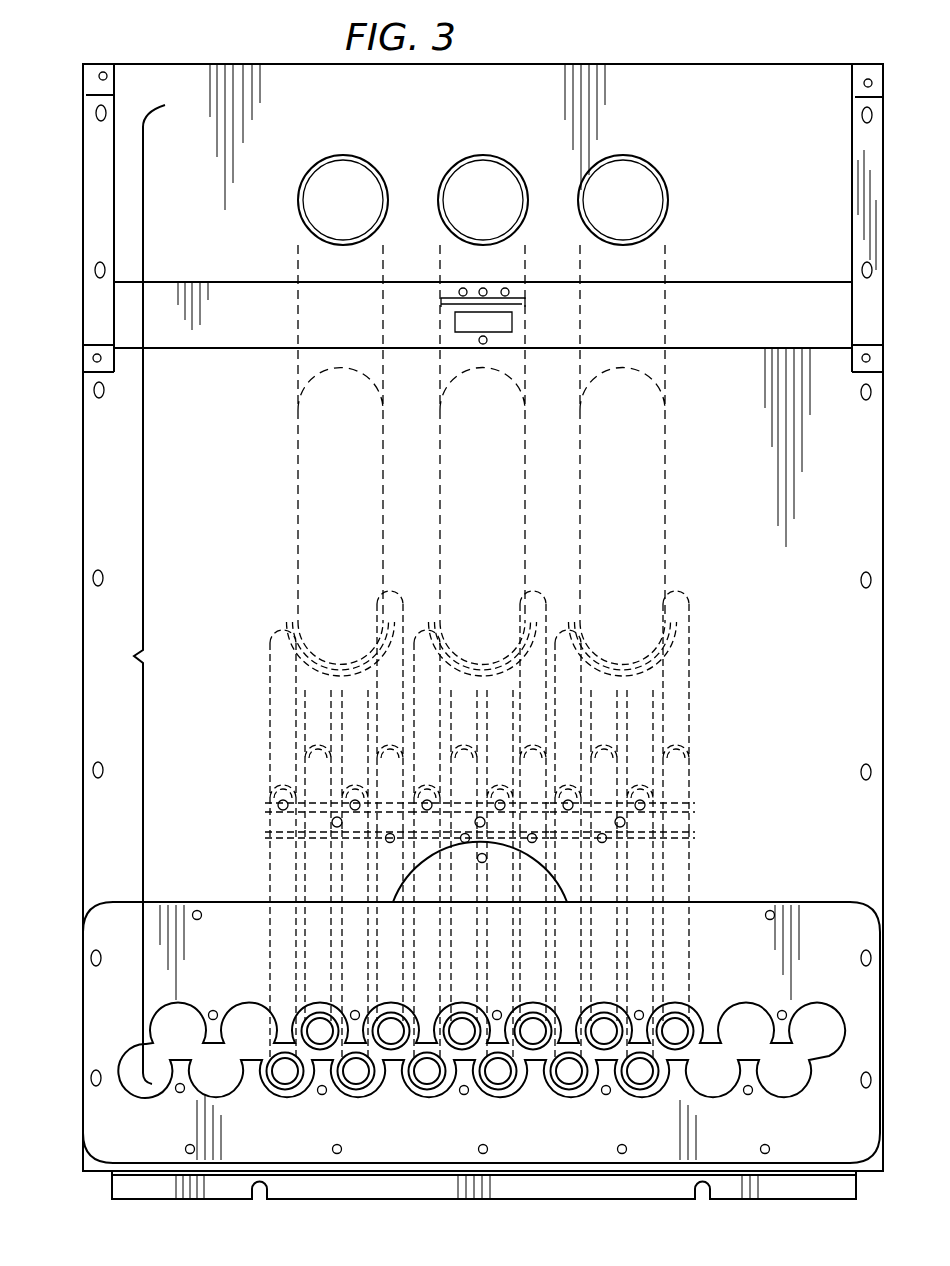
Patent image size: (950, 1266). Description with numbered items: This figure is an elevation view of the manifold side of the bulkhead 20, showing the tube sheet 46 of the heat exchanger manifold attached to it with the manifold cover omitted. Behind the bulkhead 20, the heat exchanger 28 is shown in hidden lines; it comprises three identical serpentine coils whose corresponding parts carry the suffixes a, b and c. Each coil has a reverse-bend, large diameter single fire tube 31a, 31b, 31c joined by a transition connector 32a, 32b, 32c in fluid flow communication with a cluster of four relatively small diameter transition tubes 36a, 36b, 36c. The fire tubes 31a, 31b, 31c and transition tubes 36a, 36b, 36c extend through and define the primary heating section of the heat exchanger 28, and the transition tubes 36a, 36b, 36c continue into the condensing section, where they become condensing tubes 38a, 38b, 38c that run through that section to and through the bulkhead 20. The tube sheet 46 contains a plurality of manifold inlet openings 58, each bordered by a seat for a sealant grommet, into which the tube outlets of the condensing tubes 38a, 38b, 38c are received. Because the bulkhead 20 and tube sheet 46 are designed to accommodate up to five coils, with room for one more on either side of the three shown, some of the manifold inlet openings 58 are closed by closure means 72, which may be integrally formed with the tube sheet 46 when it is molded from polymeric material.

The bulkhead 20 is at (185, 472).
The heat exchanger 28 is at (136, 656).
The fire tube 31a is at (322, 466).
The fire tube 31b is at (437, 480).
The fire tube 31c is at (640, 508).
The transition connector 32a is at (287, 620).
The transition connector 32b is at (540, 600).
The transition connector 32c is at (668, 606).
The transition tubes 36a is at (335, 714).
The transition tubes 36b is at (530, 685).
The transition tubes 36c is at (600, 714).
The condensing tubes 38a is at (380, 915).
The condensing tubes 38b is at (580, 920).
The condensing tubes 38c is at (635, 1000).
The tube sheet 46 is at (110, 1020).
The manifold inlet openings 58 is at (357, 1068).
The closure means 72 is at (237, 1098).